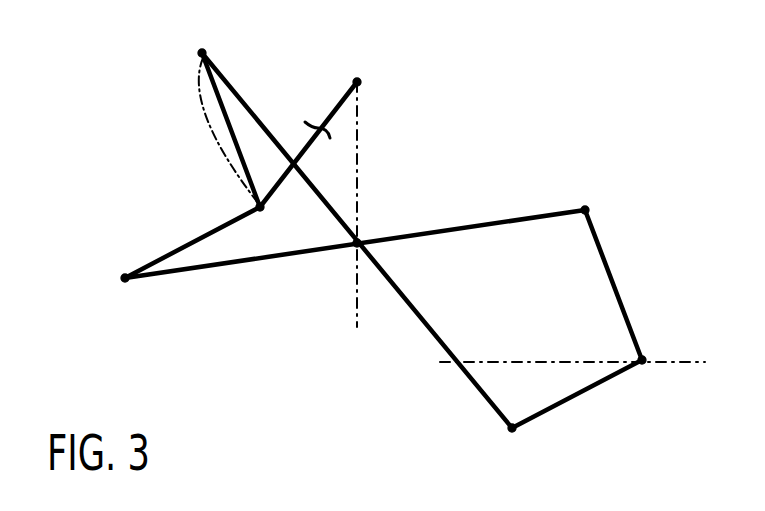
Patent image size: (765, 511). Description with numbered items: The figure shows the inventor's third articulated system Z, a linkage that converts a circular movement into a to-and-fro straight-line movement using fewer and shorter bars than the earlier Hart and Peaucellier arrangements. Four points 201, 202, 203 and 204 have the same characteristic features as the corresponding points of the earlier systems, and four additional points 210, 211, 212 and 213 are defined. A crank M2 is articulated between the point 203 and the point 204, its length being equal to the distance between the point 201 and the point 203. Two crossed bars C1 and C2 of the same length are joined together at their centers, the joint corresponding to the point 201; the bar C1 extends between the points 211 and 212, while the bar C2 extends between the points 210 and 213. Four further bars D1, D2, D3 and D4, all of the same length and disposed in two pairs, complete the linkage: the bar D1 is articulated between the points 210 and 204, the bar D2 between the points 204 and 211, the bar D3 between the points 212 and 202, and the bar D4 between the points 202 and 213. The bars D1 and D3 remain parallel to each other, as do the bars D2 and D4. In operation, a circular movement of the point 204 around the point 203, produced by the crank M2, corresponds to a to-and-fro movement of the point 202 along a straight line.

The additional point 210 is at (206, 55).
The point 203 is at (360, 82).
The point 204 is at (292, 203).
The point 201 is at (360, 240).
The additional point 211 is at (122, 280).
The additional point 212 is at (588, 212).
The point 202 is at (645, 358).
The additional point 213 is at (509, 431).
The bar D1 is at (232, 142).
The bar D2 is at (188, 244).
The bar D3 is at (653, 297).
The bar D4 is at (588, 389).
The crossed bar C1 is at (522, 221).
The crossed bar C2 is at (412, 312).
The crank M2 is at (330, 118).
The third system Z is at (123, 102).